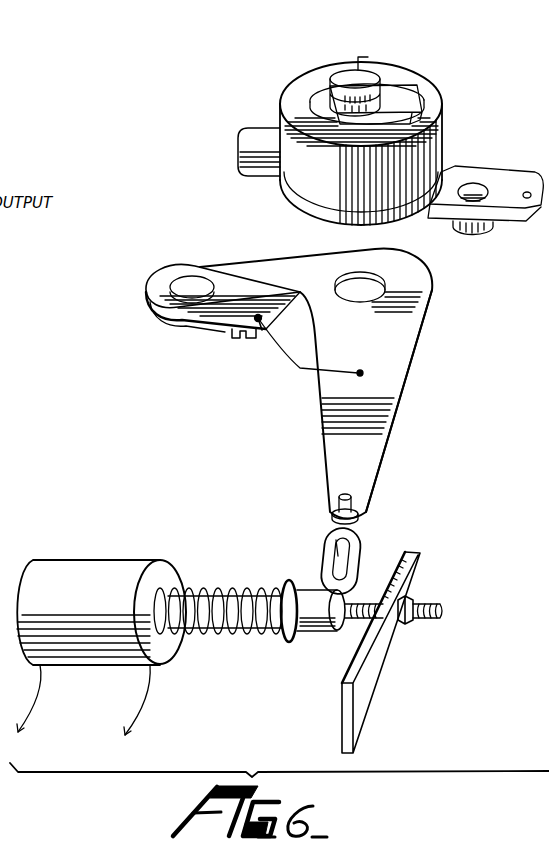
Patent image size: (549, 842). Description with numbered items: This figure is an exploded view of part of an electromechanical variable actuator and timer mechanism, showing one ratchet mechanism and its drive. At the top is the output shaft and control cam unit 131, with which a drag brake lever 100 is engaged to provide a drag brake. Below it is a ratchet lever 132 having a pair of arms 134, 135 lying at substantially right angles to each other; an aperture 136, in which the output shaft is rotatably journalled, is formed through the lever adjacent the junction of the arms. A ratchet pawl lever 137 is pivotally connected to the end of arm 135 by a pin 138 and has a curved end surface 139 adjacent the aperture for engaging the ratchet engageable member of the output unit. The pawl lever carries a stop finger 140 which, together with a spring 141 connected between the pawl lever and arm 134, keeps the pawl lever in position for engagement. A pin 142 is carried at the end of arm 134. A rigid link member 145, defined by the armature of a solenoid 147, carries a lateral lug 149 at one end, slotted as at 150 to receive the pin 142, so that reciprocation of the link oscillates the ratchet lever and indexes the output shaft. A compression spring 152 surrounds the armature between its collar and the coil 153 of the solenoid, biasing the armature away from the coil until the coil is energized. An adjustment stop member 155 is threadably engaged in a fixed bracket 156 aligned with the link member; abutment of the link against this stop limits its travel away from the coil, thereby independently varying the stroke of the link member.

The drag brake lever 100 is at (473, 182).
The output shaft and control cam unit 131 is at (283, 97).
The ratchet lever 132 is at (392, 358).
The arm 134 is at (387, 395).
The arm 135 is at (243, 264).
The aperture 136 is at (372, 276).
The ratchet pawl lever 137 is at (220, 303).
The pin 138 is at (187, 284).
The curved end surface 139 is at (302, 320).
The stop finger 140 is at (237, 333).
The spring 141 is at (262, 330).
The pin 142 is at (350, 500).
The rigid link member 145 is at (330, 632).
The solenoid 147 is at (105, 552).
The lateral lug 149 is at (360, 563).
The slot 150 is at (336, 553).
The compression spring 152 is at (205, 585).
The coil 153 is at (170, 573).
The adjustment stop member 155 is at (432, 605).
The fixed bracket 156 is at (393, 646).